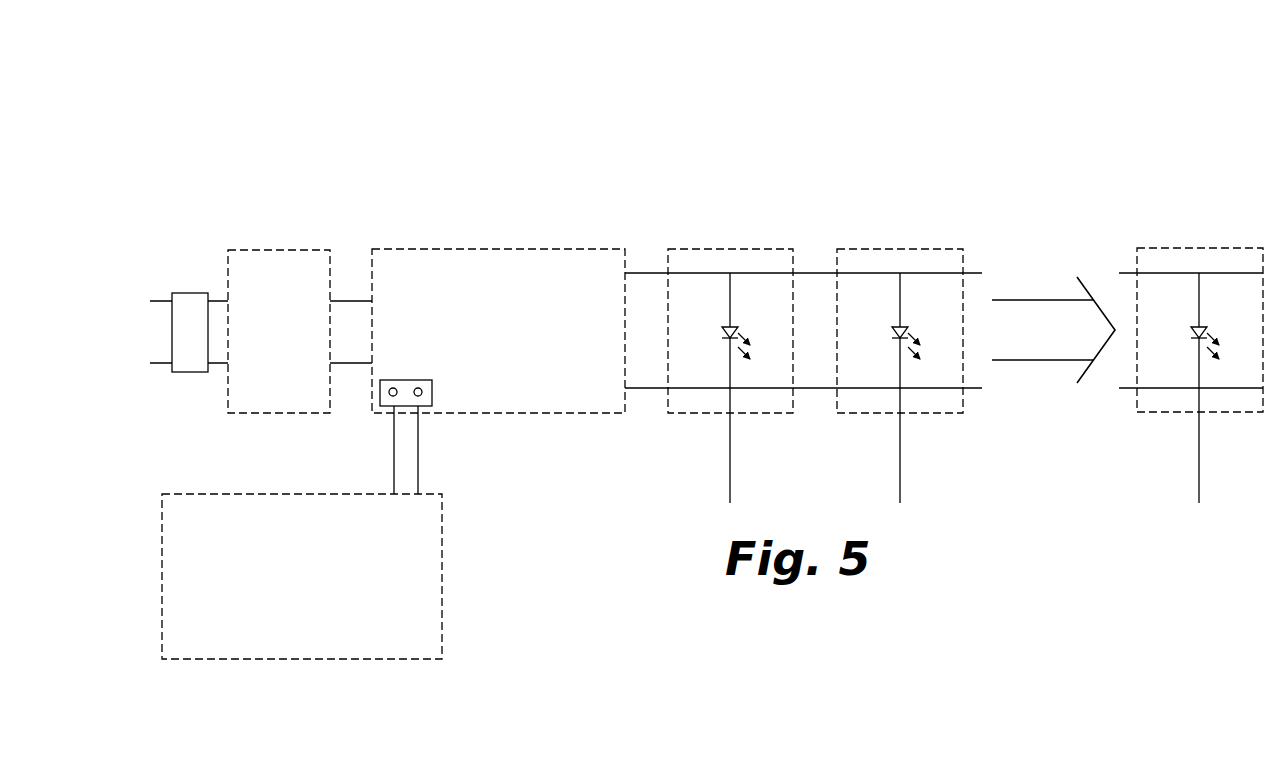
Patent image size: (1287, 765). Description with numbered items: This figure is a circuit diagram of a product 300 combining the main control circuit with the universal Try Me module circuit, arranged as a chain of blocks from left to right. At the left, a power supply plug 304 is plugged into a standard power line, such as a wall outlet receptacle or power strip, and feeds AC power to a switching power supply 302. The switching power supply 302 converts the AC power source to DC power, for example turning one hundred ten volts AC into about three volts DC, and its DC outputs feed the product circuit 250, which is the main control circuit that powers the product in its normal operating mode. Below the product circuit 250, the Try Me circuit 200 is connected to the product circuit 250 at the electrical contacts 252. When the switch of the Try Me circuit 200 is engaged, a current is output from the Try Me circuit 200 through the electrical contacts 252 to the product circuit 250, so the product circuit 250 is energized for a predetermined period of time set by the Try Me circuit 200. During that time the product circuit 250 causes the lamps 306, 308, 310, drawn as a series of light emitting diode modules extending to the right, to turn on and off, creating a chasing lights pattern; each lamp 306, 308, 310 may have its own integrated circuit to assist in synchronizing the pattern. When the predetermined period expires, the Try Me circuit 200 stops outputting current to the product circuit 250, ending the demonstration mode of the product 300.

The lighting system 300 is at (170, 117).
The switching power supply 302 is at (228, 250).
The power supply plug 304 is at (184, 293).
The product circuit 250 is at (625, 249).
The electrical contacts 252 is at (432, 390).
The Try Me circuit 200 is at (187, 494).
The lamp 306 is at (793, 249).
The lamp 308 is at (963, 249).
The lamp 310 is at (1137, 248).